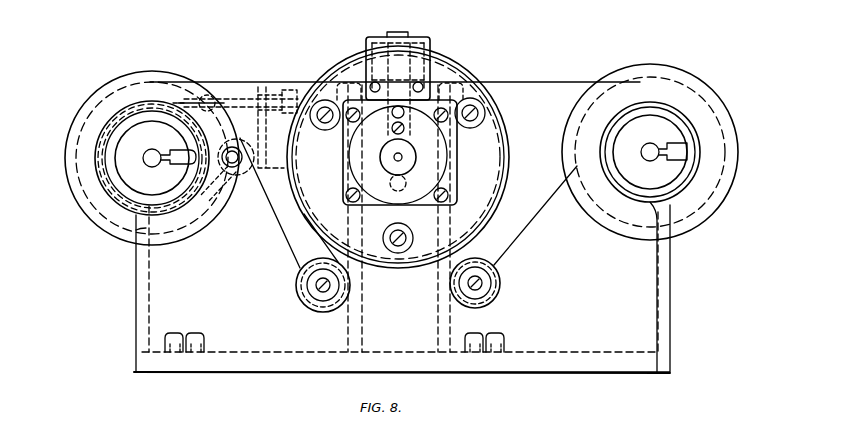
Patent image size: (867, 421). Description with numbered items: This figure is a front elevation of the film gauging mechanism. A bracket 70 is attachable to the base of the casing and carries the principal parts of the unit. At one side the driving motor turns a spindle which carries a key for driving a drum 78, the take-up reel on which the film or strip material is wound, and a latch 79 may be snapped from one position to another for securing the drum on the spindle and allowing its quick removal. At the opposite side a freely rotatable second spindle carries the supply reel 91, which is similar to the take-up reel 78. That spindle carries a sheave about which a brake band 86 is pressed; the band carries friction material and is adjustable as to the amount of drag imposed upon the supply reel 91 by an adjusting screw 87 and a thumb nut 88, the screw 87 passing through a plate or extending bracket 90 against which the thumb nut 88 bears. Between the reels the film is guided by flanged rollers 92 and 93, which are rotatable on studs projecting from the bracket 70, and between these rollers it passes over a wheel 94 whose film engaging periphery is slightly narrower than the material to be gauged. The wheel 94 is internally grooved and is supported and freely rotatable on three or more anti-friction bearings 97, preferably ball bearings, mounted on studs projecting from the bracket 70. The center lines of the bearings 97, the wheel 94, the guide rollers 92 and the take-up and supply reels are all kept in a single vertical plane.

The bracket 70 is at (647, 320).
The drum 78 is at (717, 177).
The latch 79 is at (687, 148).
The brake band 86 is at (153, 104).
The adjusting screw 87 is at (224, 100).
The thumb nut 88 is at (274, 95).
The plate or extending bracket 90 is at (241, 170).
The supply reel 91 is at (149, 146).
The flanged roller 92 is at (322, 295).
The flanged roller 93 is at (487, 290).
The wheel 94 is at (462, 66).
The anti-friction bearings 97 is at (325, 125).